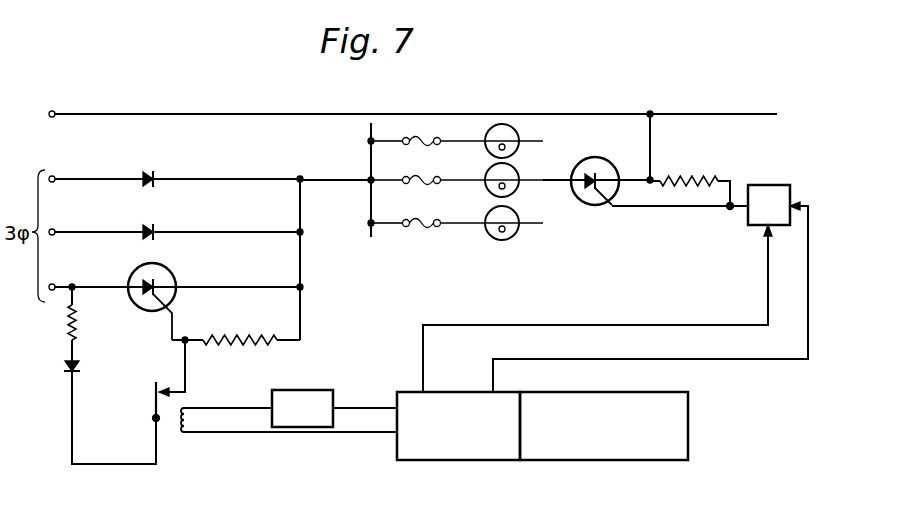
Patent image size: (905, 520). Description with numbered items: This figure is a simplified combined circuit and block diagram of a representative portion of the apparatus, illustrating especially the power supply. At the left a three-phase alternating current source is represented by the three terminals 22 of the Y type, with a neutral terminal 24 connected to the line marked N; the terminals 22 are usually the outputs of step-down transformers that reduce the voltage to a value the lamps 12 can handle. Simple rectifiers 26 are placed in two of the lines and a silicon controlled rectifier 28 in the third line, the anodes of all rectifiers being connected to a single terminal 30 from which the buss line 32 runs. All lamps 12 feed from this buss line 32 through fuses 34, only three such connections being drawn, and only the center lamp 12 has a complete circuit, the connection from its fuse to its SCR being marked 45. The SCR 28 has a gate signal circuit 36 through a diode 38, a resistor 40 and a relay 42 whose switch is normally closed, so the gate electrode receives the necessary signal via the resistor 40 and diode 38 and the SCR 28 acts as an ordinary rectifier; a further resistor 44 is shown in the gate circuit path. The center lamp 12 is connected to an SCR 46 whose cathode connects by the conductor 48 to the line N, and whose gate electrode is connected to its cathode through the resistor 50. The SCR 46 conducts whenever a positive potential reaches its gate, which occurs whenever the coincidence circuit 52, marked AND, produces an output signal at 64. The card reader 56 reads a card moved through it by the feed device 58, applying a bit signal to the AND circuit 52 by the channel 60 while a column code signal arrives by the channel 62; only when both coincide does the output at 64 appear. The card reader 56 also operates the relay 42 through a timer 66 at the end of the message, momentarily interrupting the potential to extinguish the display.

The lamps 12 is at (517, 134).
The terminals 22 is at (55, 182).
The neutral terminal 24 is at (68, 97).
The rectifiers 26 is at (156, 171).
The silicon controlled rectifier 28 is at (170, 266).
The terminal 30 is at (302, 176).
The buss line 32 is at (369, 232).
The fuses 34 is at (427, 144).
The gate signal circuit 36 is at (66, 423).
The diode 38 is at (80, 373).
The resistor 40 is at (78, 313).
The relay 42 is at (175, 420).
The resistor 44 is at (232, 344).
The conductor 45 is at (545, 186).
The SCR 46 is at (626, 155).
The conductor 48 is at (651, 146).
The resistor 50 is at (700, 178).
The coincidence circuit 52 is at (760, 185).
The card reader 56 is at (443, 462).
The feed device 58 is at (617, 462).
The channel 60 is at (705, 318).
The channel 62 is at (722, 362).
The output signal 64 is at (730, 210).
The timer 66 is at (302, 390).